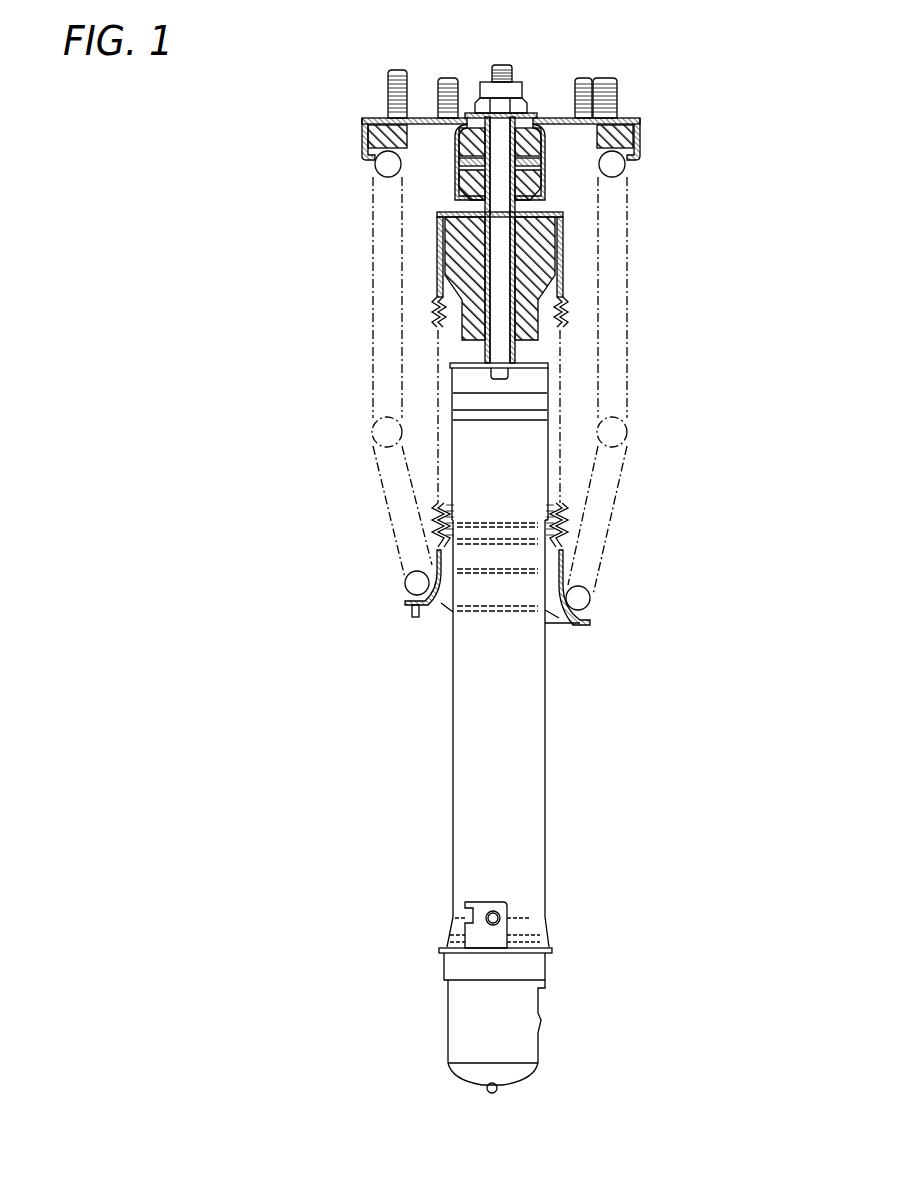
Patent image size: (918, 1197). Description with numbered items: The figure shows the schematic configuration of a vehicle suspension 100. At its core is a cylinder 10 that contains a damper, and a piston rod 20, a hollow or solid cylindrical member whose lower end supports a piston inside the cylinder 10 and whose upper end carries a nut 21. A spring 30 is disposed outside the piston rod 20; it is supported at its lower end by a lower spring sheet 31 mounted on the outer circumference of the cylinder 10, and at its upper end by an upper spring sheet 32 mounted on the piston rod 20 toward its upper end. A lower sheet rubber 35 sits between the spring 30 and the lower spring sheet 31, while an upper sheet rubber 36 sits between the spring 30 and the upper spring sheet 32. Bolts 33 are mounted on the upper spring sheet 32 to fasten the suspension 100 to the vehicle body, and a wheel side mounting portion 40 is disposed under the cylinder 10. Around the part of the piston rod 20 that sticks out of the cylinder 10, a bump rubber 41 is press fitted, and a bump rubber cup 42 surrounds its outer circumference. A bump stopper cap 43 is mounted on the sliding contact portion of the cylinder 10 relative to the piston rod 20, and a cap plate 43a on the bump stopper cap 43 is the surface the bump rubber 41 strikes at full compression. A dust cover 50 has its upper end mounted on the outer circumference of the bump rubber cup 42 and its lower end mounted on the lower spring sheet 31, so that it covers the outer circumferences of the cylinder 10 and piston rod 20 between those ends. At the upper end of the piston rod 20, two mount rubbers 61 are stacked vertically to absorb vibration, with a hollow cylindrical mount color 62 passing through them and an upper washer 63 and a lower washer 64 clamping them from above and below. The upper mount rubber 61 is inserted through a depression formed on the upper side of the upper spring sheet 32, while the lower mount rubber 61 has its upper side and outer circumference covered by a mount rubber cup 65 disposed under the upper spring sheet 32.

The suspension 100 is at (712, 76).
The cylinder 10 is at (452, 760).
The piston rod 20 is at (497, 352).
The nut 21 is at (478, 110).
The spring 30 is at (370, 403).
The lower spring sheet 31 is at (407, 610).
The upper spring sheet 32 is at (362, 136).
The bolts 33 is at (388, 88).
The lower sheet rubber 35 is at (417, 582).
The upper sheet rubber 36 is at (365, 150).
The wheel side mounting portion 40 is at (440, 966).
The bump rubber 41 is at (563, 235).
The bump rubber cup 42 is at (447, 207).
The bump stopper cap 43 is at (535, 382).
The cap plate 43a is at (535, 360).
The dust cover 50 is at (433, 500).
The mount rubbers 61 is at (545, 150).
The mount color 62 is at (640, 127).
The upper washer 63 is at (530, 116).
The lower washer 64 is at (543, 203).
The mount rubber cup 65 is at (447, 183).